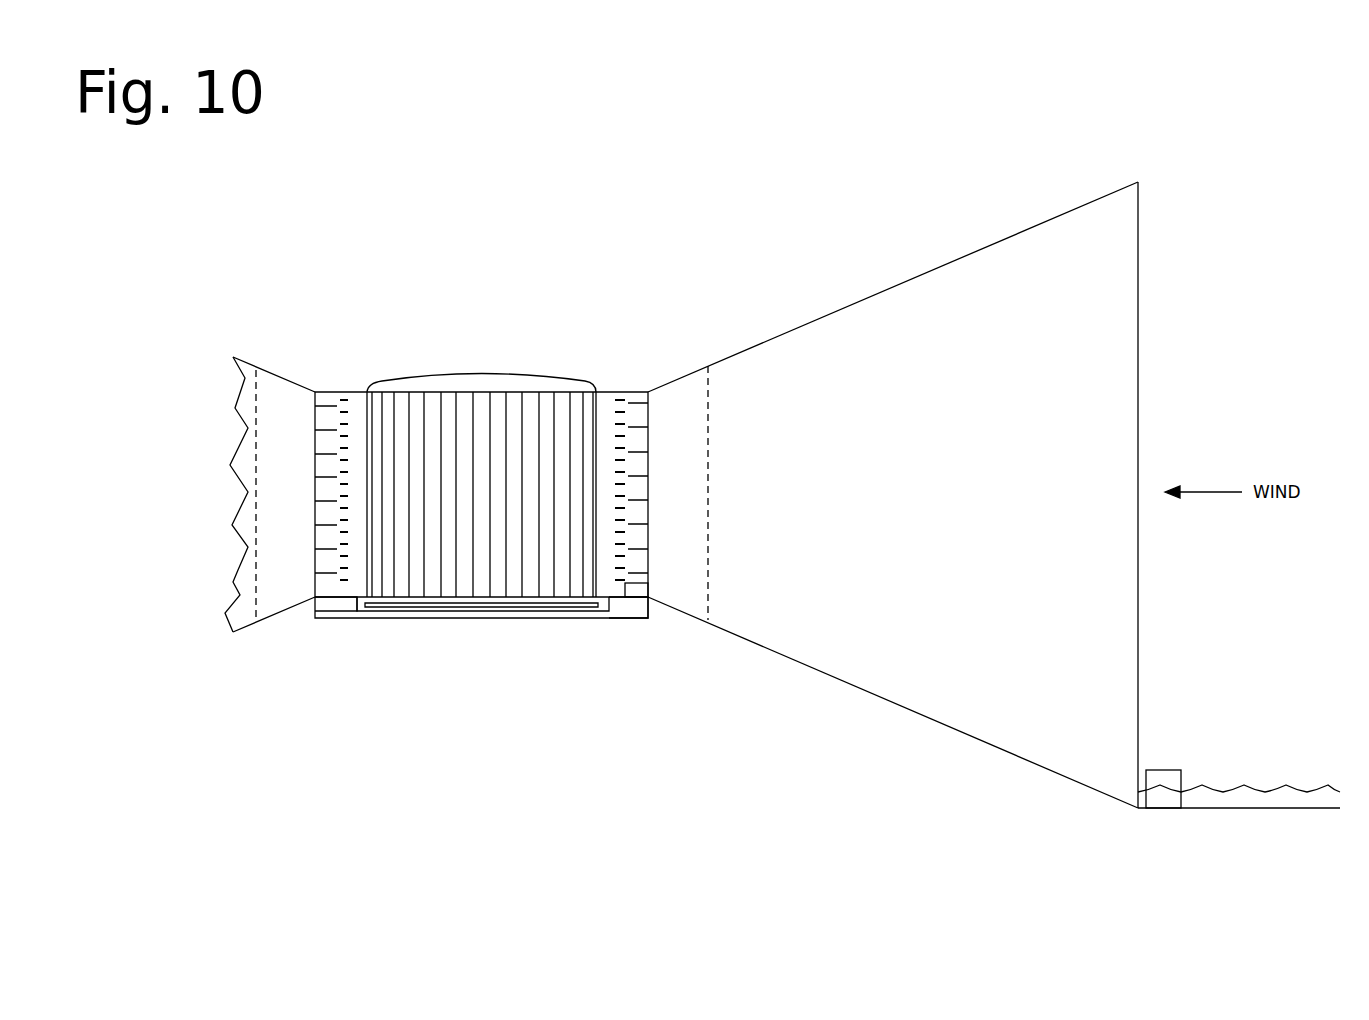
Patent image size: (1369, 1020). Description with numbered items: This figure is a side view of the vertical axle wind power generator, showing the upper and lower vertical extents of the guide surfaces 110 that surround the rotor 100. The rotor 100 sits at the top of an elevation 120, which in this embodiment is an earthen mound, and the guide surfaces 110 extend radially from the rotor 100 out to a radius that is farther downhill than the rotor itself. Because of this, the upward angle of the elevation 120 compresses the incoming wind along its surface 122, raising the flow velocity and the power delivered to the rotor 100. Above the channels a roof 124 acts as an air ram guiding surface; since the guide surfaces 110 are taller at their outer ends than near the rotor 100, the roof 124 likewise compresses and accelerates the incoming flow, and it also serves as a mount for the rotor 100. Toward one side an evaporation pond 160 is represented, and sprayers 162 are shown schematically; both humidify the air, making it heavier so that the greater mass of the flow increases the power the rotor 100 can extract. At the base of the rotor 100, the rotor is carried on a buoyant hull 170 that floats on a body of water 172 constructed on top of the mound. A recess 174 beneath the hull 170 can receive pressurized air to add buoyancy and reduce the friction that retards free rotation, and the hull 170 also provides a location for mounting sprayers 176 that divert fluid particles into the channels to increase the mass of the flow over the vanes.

The rotor 100 is at (472, 400).
The guide surfaces 110 is at (1017, 501).
The elevation 120 is at (643, 747).
The surface 122 is at (868, 691).
The roof 124 is at (945, 263).
The evaporation pond 160 is at (1226, 815).
The sprayers 162 is at (1173, 778).
The hull 170 is at (332, 603).
The body of water 172 is at (630, 612).
The recess 174 is at (378, 607).
The sprayers 176 is at (647, 593).